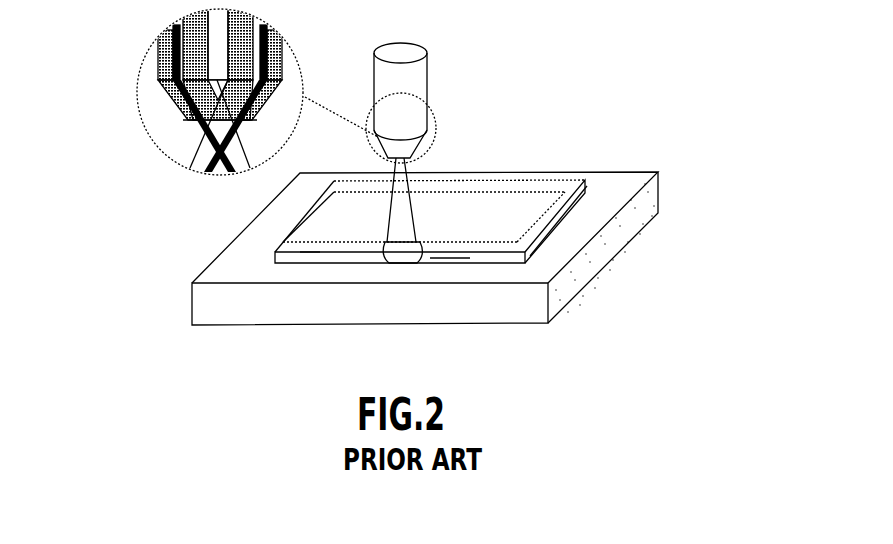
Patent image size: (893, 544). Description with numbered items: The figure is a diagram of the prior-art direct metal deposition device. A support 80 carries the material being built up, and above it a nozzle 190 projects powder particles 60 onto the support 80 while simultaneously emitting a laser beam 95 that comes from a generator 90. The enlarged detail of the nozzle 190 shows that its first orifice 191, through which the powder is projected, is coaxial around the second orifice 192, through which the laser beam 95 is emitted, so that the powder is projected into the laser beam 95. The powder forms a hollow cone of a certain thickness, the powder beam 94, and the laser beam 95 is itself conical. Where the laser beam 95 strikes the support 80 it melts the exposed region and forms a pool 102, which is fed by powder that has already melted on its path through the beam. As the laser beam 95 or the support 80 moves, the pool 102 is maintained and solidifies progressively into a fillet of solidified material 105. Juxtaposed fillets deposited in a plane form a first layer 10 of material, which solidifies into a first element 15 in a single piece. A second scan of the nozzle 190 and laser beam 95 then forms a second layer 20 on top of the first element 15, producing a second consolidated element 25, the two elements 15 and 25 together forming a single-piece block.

The first layer 10 is at (453, 257).
The first element 15 is at (540, 243).
The second layer 20 is at (507, 247).
The second consolidated element 25 is at (556, 218).
The particles of powder 60 is at (205, 97).
The support 80 is at (217, 270).
The generator 90 is at (412, 82).
The powder beam 94 is at (235, 125).
The laser beam 95 is at (398, 203).
The pool 102 is at (400, 245).
The fillet of solidified material 105 is at (313, 252).
The nozzle 190 is at (410, 140).
The first orifice 191 is at (165, 68).
The second orifice 192 is at (225, 103).